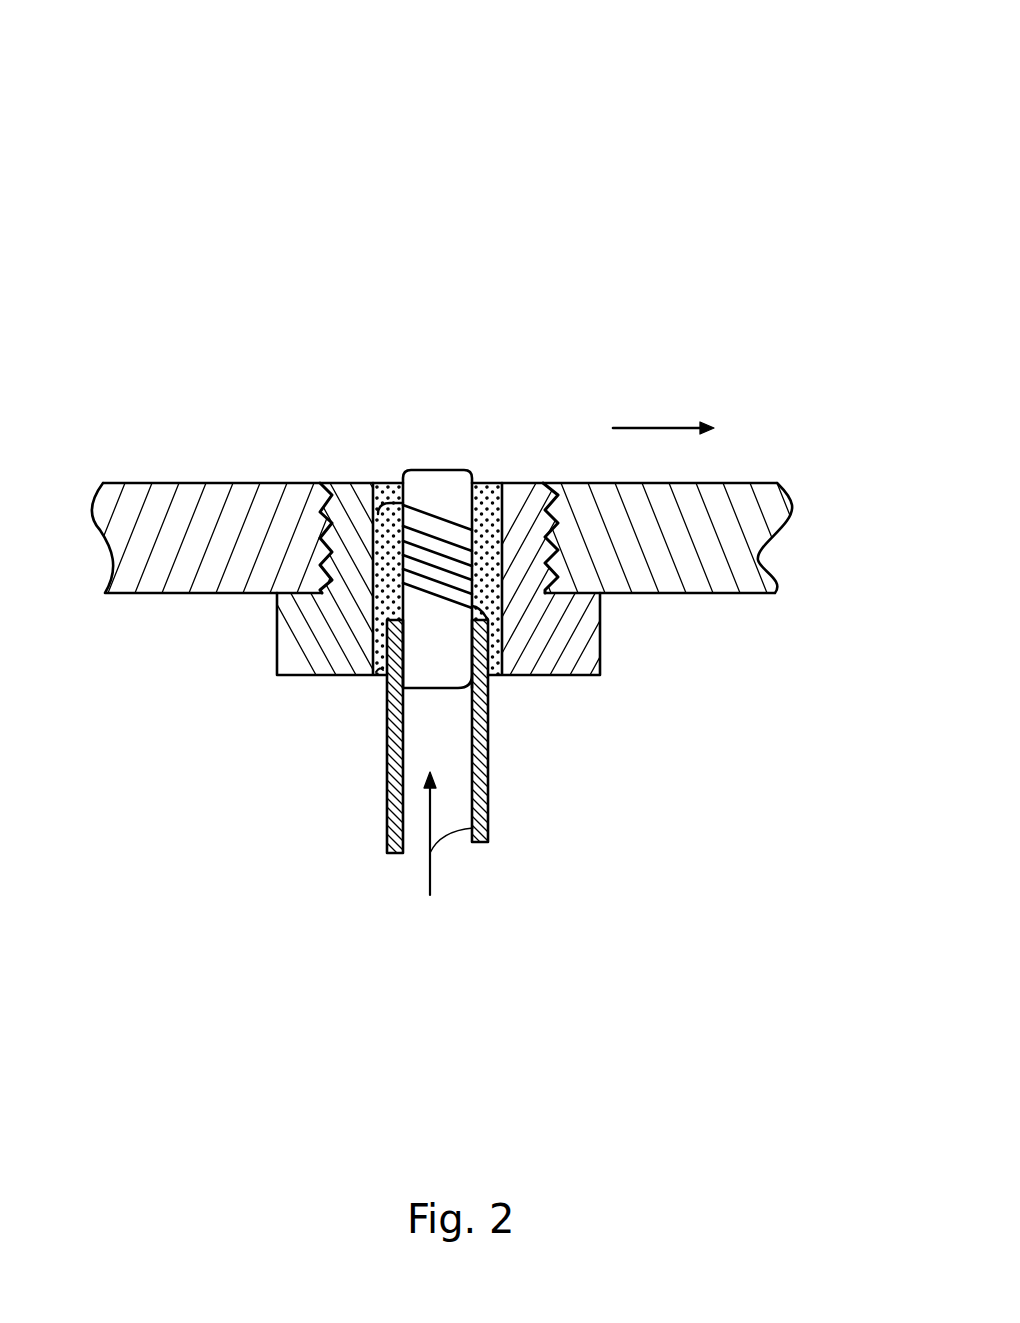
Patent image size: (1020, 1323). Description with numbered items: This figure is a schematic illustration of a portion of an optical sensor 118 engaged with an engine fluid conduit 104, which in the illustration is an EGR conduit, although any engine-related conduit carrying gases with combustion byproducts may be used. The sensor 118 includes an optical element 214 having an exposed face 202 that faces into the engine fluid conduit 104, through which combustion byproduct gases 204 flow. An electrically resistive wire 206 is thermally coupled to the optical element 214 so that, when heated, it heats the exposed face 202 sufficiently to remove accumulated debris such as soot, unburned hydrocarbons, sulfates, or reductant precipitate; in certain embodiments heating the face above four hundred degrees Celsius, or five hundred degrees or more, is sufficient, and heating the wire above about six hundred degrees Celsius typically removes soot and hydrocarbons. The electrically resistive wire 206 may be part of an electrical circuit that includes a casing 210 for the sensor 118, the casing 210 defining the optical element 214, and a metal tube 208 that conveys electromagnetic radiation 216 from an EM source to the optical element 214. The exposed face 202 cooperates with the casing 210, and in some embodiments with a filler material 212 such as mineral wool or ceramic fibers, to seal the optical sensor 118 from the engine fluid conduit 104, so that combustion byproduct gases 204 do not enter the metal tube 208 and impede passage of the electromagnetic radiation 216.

The optical sensor 118 is at (100, 67).
The engine fluid conduit 104 is at (148, 595).
The exposed face 202 is at (433, 450).
The combustion byproduct gases 204 is at (660, 428).
The electrically resistive wire 206 is at (394, 500).
The metal tube 208 is at (490, 805).
The casing 210 is at (585, 677).
The filler material 212 is at (378, 672).
The optical element 214 is at (430, 650).
The electromagnetic radiation 216 is at (400, 855).